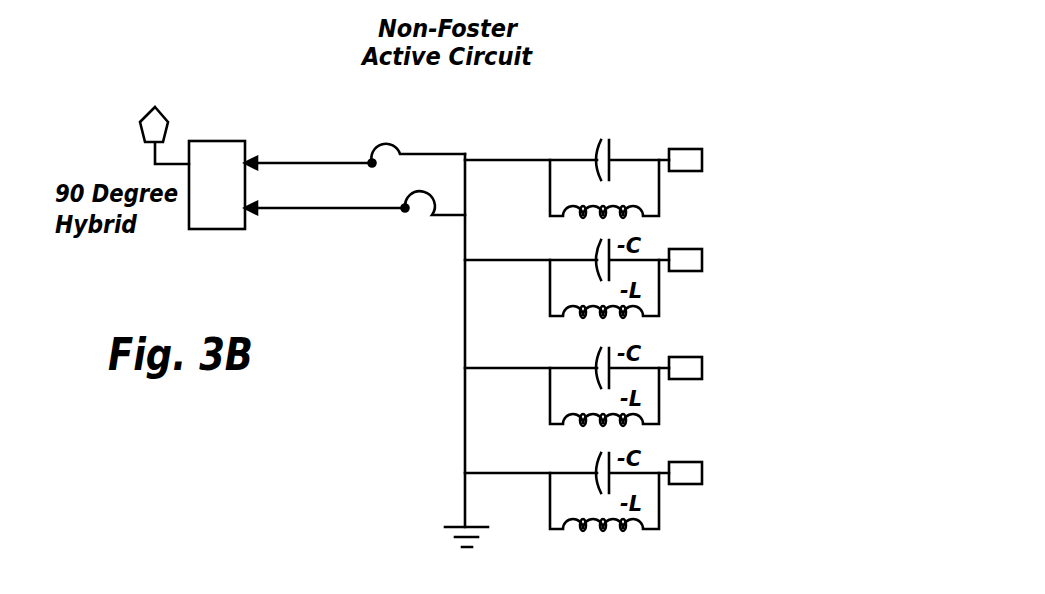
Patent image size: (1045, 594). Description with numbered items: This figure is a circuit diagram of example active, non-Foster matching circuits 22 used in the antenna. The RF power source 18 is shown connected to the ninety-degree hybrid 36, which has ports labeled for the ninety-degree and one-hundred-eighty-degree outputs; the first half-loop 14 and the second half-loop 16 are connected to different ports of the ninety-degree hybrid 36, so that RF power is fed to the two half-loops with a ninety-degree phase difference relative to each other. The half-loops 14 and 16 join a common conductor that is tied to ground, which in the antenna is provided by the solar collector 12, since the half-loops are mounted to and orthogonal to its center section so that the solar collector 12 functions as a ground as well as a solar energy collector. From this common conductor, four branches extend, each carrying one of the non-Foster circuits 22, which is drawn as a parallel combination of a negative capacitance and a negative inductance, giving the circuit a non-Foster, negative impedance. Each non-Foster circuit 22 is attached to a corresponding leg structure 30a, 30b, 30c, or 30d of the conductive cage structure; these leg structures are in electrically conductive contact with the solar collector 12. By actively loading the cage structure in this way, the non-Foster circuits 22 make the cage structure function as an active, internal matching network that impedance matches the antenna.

The solar collector 12 is at (443, 519).
The first half-loop 14 is at (386, 141).
The second half-loop 16 is at (421, 200).
The RF power source 18 is at (144, 112).
The non-Foster circuit 22 is at (667, 127).
The leg structure 30a is at (702, 160).
The leg structure 30b is at (702, 260).
The leg structure 30c is at (702, 368).
The leg structure 30d is at (702, 473).
The ninety-degree hybrid 36 is at (236, 140).